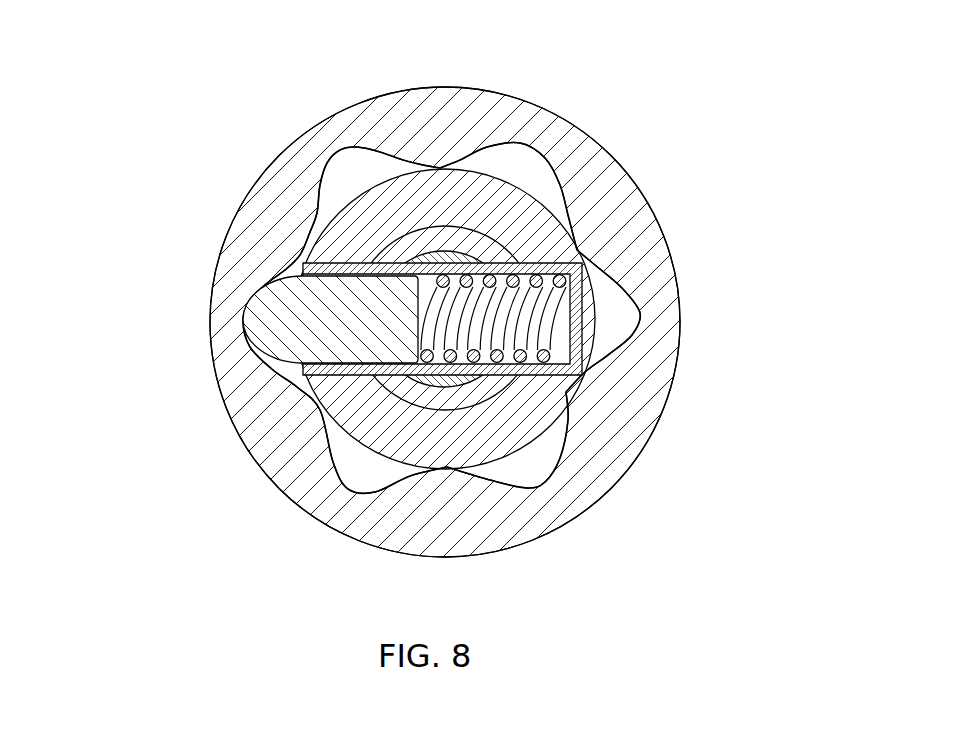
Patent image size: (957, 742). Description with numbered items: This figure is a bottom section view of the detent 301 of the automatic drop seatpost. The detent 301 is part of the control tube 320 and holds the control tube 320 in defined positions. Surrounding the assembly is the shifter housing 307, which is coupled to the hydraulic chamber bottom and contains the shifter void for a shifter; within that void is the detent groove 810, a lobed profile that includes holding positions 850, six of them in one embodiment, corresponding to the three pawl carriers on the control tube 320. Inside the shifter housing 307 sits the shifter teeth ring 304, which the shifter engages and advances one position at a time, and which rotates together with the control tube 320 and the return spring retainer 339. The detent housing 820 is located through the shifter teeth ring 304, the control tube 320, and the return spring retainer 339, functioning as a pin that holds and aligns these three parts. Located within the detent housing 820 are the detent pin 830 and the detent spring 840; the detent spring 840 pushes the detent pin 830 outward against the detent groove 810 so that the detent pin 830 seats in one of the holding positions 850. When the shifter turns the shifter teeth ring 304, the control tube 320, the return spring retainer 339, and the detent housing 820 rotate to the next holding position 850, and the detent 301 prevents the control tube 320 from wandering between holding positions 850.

The detent 301 is at (177, 133).
The shifter teeth ring 304 is at (413, 202).
The shifter housing 307 is at (622, 181).
The control tube 320 is at (403, 250).
The return spring retainer 339 is at (420, 257).
The detent groove 810 is at (635, 305).
The detent housing 820 is at (566, 377).
The detent pin 830 is at (258, 323).
The detent spring 840 is at (548, 320).
The holding positions 850 is at (333, 177).